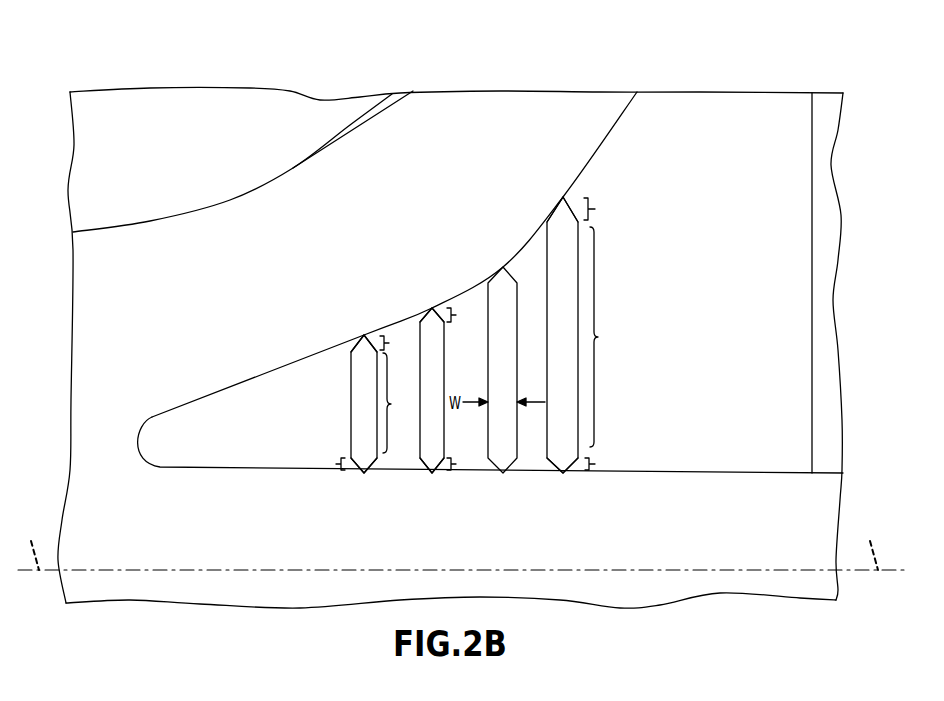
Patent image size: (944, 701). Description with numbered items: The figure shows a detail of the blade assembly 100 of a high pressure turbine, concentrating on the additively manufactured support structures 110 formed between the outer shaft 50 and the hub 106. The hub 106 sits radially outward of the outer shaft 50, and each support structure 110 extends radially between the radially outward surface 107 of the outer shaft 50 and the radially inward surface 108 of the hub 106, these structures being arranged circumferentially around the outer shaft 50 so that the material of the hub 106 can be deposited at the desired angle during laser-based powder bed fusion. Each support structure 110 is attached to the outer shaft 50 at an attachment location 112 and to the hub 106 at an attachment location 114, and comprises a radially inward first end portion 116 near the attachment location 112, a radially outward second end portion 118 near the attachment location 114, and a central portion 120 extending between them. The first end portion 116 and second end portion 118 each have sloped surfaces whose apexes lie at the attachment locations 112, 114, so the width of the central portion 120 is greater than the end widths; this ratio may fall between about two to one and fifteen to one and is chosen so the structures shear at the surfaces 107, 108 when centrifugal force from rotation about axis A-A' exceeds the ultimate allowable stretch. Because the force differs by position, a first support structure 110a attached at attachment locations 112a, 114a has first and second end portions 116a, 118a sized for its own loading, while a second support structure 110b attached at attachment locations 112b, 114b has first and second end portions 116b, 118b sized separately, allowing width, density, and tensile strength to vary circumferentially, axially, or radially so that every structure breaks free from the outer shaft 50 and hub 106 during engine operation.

The blade assembly 100 is at (182, 107).
The outer shaft 50 is at (271, 536).
The hub 106 is at (373, 232).
The radially outward surface 107 is at (258, 471).
The radially inward surface 108 is at (302, 360).
The first support structure 110a is at (350, 377).
The second support structure 110b is at (420, 332).
The support structure 110 is at (488, 298).
The attachment location 112a is at (363, 473).
The attachment location 112b is at (433, 473).
The attachment location 112 is at (562, 473).
The attachment location 114a is at (364, 335).
The attachment location 114b is at (432, 308).
The attachment location 114 is at (565, 197).
The first end portion 116a is at (326, 464).
The first end portion 116b is at (467, 464).
The first end portion 116 is at (602, 464).
The second end portion 118a is at (398, 345).
The second end portion 118b is at (467, 314).
The second end portion 118 is at (601, 210).
The central portion 120 is at (508, 340).